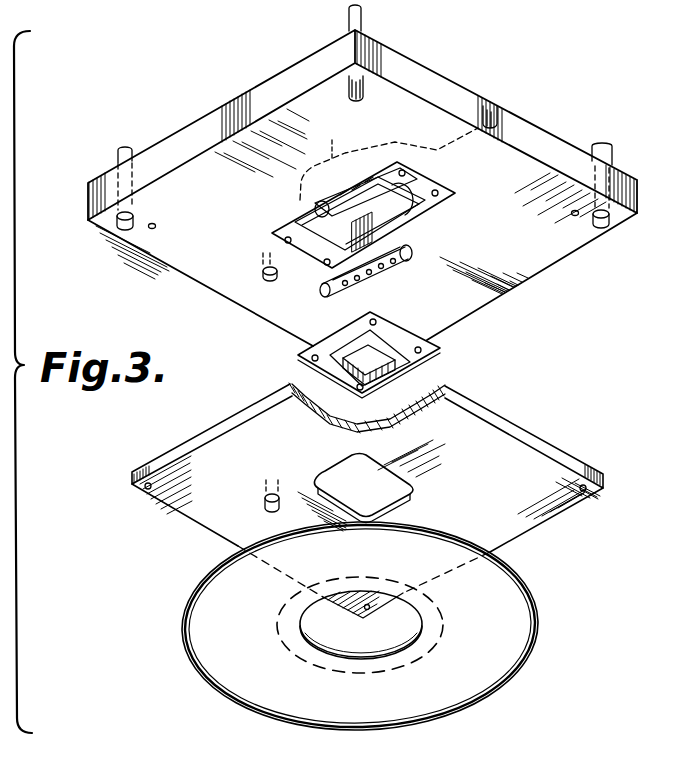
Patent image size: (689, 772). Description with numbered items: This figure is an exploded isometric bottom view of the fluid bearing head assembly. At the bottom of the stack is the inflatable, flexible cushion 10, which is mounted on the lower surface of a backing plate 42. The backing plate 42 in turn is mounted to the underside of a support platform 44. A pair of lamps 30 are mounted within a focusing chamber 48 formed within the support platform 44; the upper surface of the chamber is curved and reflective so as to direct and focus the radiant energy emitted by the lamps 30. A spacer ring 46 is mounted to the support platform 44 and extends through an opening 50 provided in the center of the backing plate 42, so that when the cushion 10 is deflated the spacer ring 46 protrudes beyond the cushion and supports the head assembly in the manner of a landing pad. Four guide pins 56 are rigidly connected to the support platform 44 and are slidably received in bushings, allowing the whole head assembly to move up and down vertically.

The inflatable, flexible cushion 10 is at (494, 674).
The lamps 30 is at (405, 221).
The backing plate 42 is at (566, 460).
The support platform 44 is at (177, 146).
The spacer ring 46 is at (442, 353).
The focusing chamber 48 is at (375, 192).
The opening 50 is at (322, 490).
The guide pins 56 is at (365, 20).